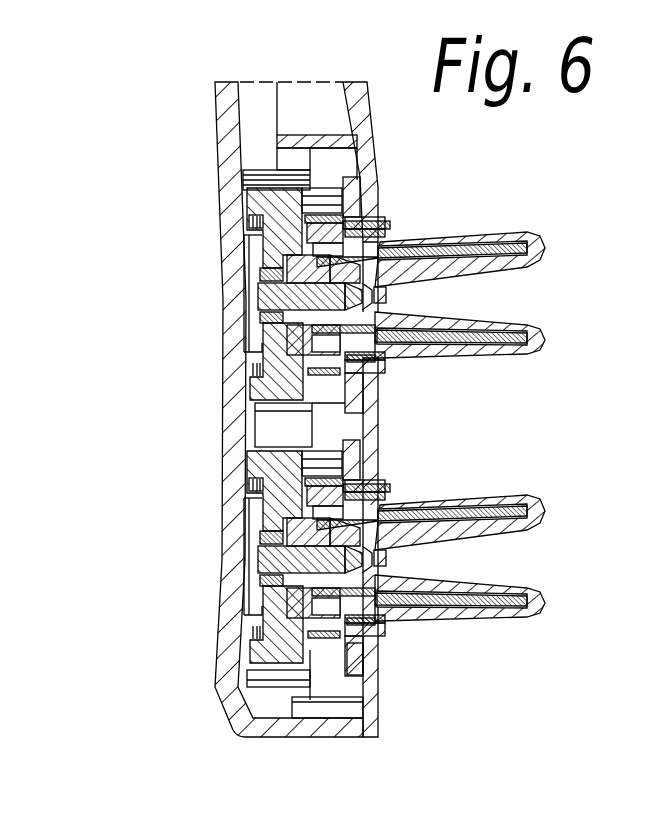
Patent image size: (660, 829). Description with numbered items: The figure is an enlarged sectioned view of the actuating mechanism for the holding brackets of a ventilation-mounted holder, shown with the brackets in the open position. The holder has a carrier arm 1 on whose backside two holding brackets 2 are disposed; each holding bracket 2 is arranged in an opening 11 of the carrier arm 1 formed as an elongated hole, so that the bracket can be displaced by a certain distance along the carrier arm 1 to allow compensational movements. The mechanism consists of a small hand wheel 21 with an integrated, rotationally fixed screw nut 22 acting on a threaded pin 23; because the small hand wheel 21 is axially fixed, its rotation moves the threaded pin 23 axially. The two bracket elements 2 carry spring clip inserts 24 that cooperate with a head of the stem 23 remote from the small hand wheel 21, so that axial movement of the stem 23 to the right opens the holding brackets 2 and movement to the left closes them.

The carrier arm 1 is at (226, 115).
The holding bracket 2 is at (499, 257).
The opening 11 is at (368, 212).
The small hand wheel 21 is at (258, 217).
The screw nut 22 is at (262, 318).
The threaded pin 23 is at (258, 293).
The spring clip insert 24 is at (454, 255).